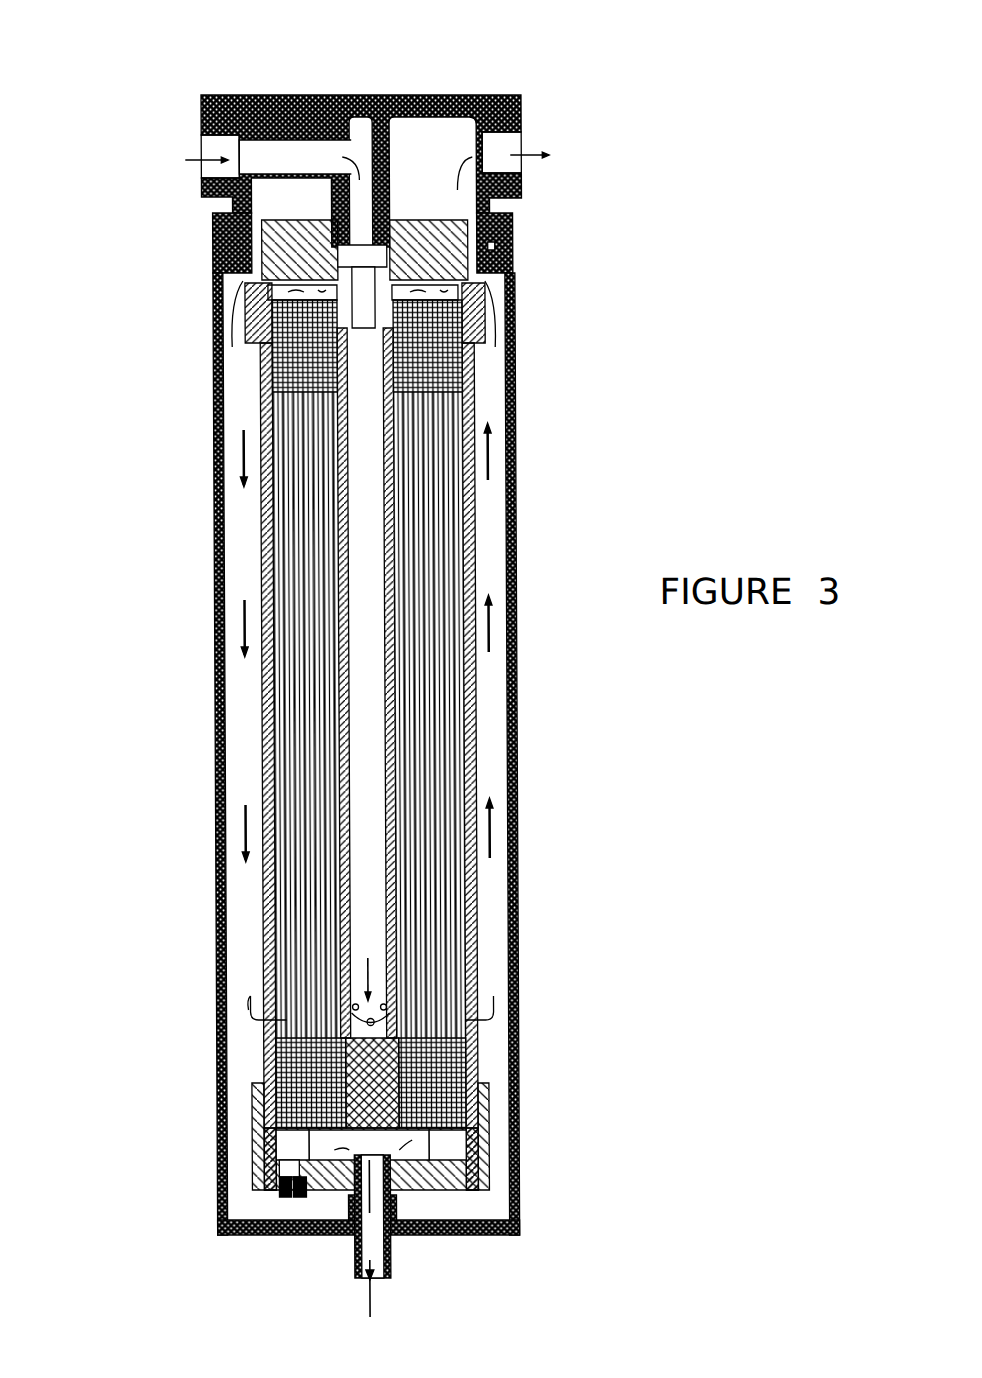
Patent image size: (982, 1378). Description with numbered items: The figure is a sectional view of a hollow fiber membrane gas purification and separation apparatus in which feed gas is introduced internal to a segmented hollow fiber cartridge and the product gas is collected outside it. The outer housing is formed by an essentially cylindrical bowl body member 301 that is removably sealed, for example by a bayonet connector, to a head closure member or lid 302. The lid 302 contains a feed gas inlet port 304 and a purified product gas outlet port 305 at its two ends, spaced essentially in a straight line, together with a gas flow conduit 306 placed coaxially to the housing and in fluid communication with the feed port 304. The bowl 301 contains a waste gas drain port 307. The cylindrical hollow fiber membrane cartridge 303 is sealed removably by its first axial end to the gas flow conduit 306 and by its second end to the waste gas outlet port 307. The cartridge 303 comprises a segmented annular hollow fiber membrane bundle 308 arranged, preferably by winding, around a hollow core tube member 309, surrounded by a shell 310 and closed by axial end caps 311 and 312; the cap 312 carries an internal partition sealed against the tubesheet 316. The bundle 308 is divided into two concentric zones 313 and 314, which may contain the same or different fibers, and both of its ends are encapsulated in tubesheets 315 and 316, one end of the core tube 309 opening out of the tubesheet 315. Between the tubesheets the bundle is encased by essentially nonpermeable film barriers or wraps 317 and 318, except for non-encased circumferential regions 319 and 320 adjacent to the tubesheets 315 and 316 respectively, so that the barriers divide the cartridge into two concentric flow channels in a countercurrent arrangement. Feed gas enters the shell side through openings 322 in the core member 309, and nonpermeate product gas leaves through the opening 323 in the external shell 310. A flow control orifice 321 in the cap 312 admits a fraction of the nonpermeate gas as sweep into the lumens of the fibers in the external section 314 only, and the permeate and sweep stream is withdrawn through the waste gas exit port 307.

The bowl body member 301 is at (515, 822).
The head closure member 302 is at (395, 95).
The hollow fiber membrane cartridge 303 is at (486, 537).
The feed gas inlet port 304 is at (216, 145).
The purified product gas outlet port 305 is at (508, 143).
The gas flow conduit 306 is at (358, 208).
The waste gas drain port 307 is at (378, 1272).
The hollow fiber membrane bundle 308 is at (409, 470).
The hollow core tube member 309 is at (374, 447).
The shell 310 is at (475, 690).
The axial end cap 311 is at (513, 218).
The axial end cap 312 is at (486, 1170).
The inner hollow fiber zone 313 is at (322, 585).
The external hollow fiber zone 314 is at (280, 724).
The tubesheet 315 is at (515, 303).
The tubesheet 316 is at (473, 1063).
The film barrier 317 is at (307, 945).
The film barrier 318 is at (267, 830).
The non-encased circumferential region 319 is at (302, 397).
The non-encased circumferential region 320 is at (262, 991).
The flow control orifice 321 is at (279, 1165).
The openings 322 is at (385, 1000).
The opening 323 is at (479, 997).